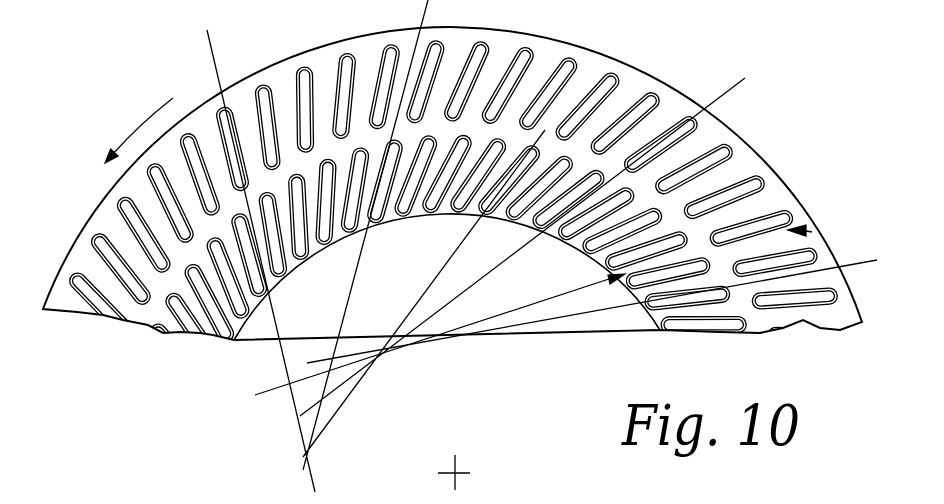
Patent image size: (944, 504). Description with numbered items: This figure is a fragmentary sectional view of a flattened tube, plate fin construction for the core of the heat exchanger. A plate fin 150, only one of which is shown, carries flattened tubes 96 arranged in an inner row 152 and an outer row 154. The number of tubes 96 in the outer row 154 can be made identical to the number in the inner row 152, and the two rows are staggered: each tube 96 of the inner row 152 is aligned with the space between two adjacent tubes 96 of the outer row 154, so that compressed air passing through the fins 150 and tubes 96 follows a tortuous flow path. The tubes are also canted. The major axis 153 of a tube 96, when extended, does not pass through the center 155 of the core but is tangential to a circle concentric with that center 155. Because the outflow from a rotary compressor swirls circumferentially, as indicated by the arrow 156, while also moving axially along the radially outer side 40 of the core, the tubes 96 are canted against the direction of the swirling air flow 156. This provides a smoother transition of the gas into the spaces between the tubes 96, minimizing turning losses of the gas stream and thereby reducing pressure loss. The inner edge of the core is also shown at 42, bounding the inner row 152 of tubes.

The radially outer side 40 is at (793, 190).
The inner edge 42 is at (410, 228).
The flattened tubes 96 is at (690, 110).
The plate fins 150 is at (451, 215).
The inner row 152 is at (580, 295).
The major axis 153 is at (275, 388).
The outer row 154 is at (812, 232).
The center 155 is at (462, 470).
The arrow 156 is at (147, 118).